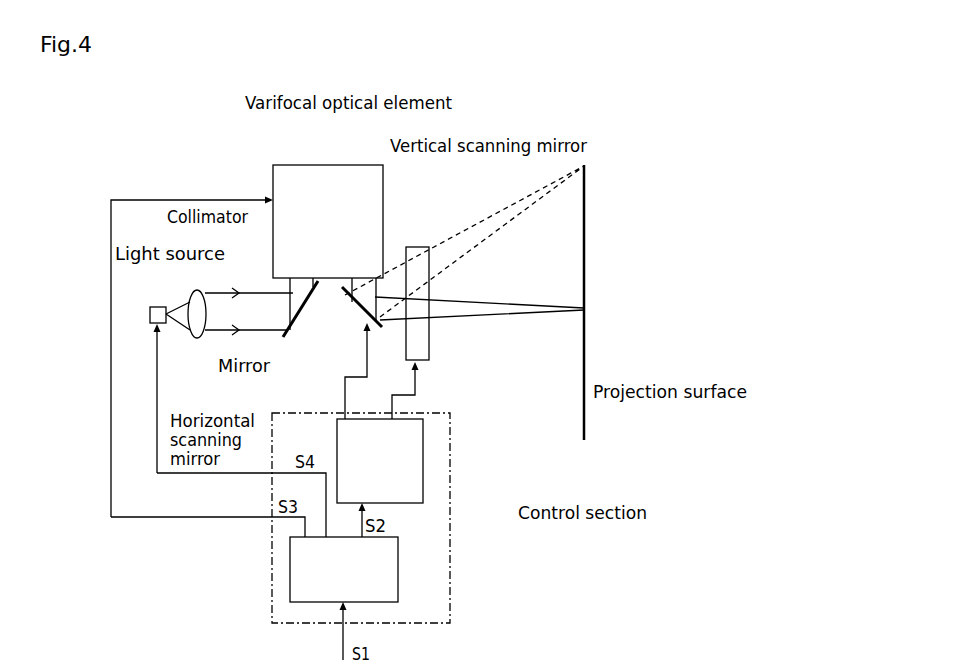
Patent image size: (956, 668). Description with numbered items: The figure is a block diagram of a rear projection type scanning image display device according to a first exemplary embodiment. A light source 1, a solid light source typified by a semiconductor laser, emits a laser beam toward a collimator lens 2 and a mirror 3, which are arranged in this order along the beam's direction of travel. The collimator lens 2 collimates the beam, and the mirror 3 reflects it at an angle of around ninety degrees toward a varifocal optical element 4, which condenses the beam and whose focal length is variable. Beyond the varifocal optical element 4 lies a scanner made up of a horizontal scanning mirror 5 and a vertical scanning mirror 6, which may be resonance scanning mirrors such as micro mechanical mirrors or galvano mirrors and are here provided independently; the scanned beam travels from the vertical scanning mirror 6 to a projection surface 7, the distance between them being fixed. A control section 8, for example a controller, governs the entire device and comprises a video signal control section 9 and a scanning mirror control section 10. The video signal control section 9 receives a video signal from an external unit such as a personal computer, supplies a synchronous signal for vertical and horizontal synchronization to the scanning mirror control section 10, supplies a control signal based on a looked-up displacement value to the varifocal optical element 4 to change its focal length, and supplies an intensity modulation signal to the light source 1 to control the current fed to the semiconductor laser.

The light source 1 is at (153, 306).
The collimator lens 2 is at (197, 290).
The mirror 3 is at (300, 331).
The varifocal optical element 4 is at (313, 167).
The horizontal scanning mirror 5 is at (341, 296).
The vertical scanning mirror 6 is at (406, 247).
The projection surface 7 is at (585, 430).
The control section 8 is at (447, 518).
The video signal control section 9 is at (399, 572).
The scanning mirror control section 10 is at (424, 445).